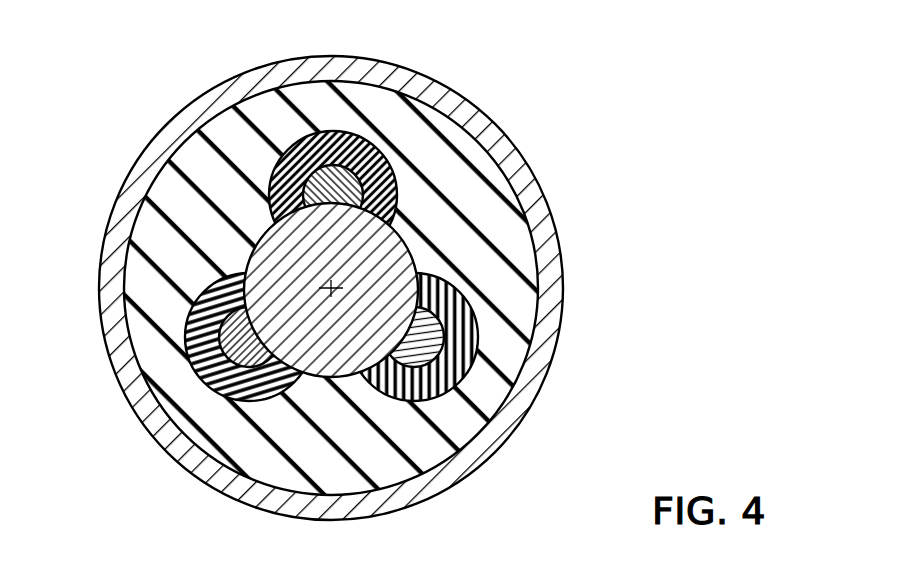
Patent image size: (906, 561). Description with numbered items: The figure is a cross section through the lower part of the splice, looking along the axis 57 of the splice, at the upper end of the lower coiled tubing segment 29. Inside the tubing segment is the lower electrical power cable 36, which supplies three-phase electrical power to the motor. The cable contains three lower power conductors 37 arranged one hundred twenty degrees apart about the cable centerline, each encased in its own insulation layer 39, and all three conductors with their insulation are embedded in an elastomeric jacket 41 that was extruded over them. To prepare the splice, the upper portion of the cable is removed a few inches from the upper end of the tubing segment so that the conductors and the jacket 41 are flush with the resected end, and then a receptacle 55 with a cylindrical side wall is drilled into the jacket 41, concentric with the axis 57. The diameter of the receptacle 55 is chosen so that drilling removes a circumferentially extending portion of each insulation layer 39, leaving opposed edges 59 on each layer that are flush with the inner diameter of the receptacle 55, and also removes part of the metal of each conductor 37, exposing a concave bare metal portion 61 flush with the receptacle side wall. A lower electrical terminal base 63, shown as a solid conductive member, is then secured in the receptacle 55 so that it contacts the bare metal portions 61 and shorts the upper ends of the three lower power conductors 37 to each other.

The lower coiled tubing segment 29 is at (375, 66).
The lower electrical power cable 36 is at (450, 108).
The elastomeric jacket 41 is at (527, 305).
The receptacle 55 is at (405, 248).
The axis 57 is at (331, 288).
The lower electrical terminal base 63 is at (274, 282).
The lower power conductor 37 is at (193, 305).
The concave bare metal portion 61 is at (240, 340).
The insulation layer 39 is at (430, 392).
The opposed edges 59 is at (384, 348).